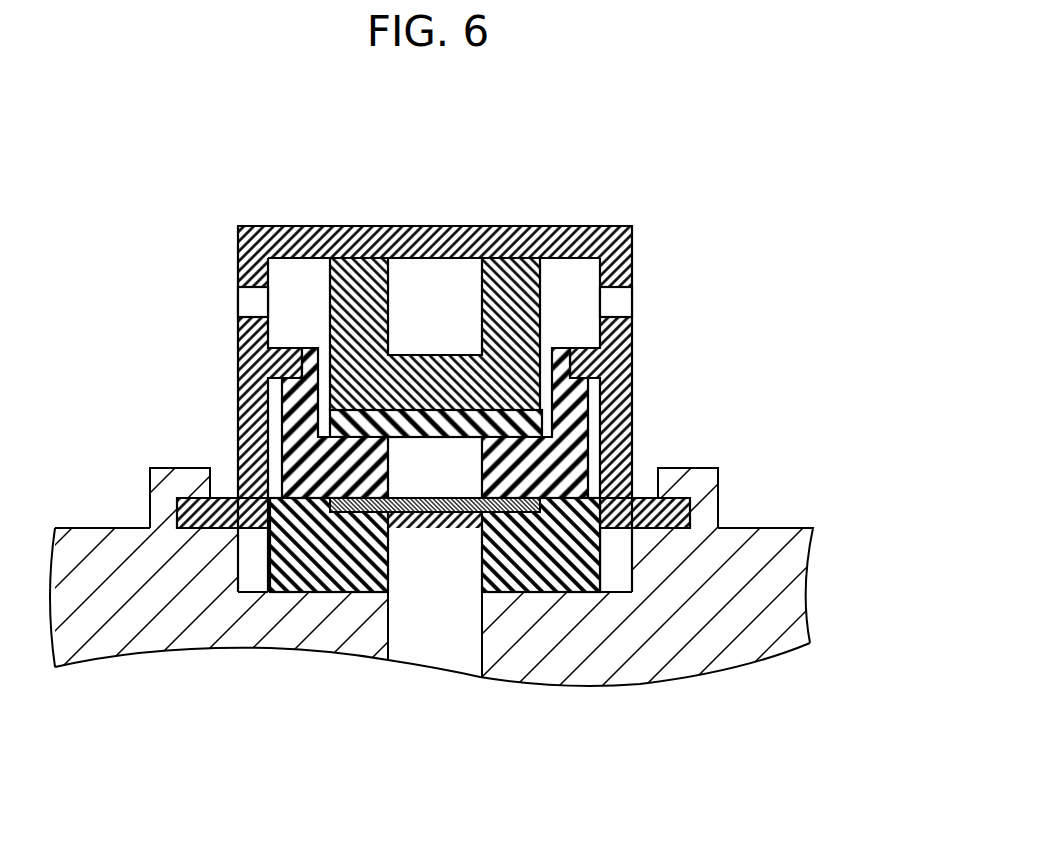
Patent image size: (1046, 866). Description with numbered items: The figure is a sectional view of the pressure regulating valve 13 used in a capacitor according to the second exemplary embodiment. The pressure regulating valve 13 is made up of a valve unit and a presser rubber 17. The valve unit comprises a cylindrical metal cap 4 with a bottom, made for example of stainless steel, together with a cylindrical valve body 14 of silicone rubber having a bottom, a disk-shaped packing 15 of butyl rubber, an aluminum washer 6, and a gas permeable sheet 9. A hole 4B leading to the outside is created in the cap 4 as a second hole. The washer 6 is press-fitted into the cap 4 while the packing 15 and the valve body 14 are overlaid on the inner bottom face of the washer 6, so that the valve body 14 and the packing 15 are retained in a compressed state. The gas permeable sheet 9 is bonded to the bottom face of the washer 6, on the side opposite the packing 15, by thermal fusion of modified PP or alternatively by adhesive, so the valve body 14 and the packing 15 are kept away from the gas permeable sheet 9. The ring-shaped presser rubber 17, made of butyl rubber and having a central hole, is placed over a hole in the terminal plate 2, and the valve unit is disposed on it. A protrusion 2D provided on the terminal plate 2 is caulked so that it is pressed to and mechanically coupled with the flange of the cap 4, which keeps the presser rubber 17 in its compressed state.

The terminal plate 2 is at (772, 580).
The protrusion 2D is at (182, 467).
The cap 4 is at (337, 222).
The hole 4B is at (615, 300).
The washer 6 is at (293, 448).
The gas permeable sheet 9 is at (427, 513).
The pressure regulating valve 13 is at (450, 433).
The valve body 14 is at (512, 275).
The packing 15 is at (547, 422).
The presser rubber 17 is at (310, 580).